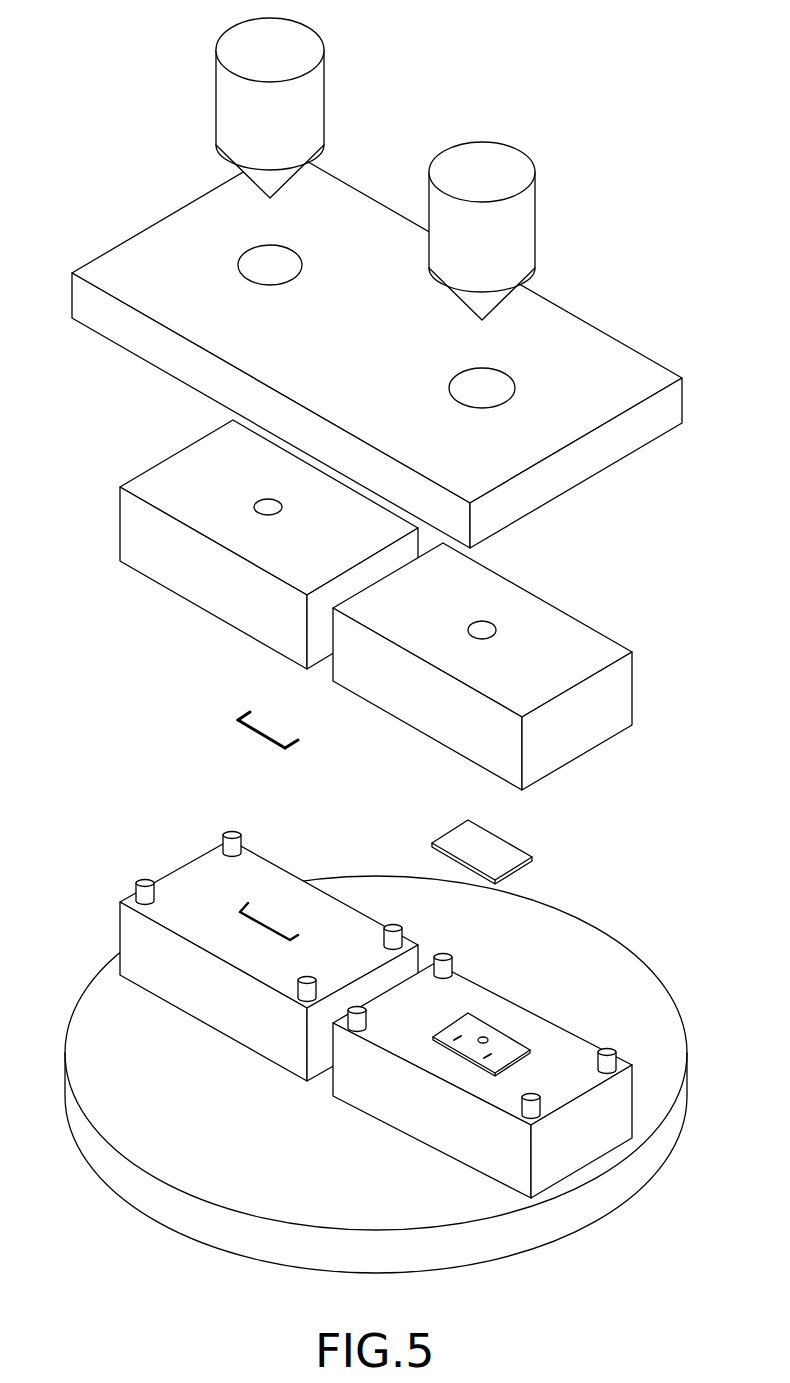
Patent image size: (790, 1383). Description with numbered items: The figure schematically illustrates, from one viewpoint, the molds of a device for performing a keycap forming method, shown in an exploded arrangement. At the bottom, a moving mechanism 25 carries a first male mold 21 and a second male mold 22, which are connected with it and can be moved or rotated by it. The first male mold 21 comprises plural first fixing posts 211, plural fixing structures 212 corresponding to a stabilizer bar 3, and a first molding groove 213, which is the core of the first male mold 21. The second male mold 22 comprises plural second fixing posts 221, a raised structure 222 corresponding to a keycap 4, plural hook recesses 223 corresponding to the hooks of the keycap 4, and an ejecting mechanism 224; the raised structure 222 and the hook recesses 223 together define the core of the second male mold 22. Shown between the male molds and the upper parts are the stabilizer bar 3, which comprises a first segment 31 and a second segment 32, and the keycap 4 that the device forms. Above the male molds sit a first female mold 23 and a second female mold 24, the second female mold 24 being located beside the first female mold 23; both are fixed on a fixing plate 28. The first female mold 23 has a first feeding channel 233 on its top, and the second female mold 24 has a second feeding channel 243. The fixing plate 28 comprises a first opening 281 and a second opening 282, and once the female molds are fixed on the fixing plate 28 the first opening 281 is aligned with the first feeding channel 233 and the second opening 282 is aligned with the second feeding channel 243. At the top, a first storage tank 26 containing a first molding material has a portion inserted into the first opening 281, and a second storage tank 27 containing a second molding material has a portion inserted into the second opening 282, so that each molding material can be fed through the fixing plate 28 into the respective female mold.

The stabilizer bar 3 is at (258, 740).
The keycap 4 is at (487, 855).
The first male mold 21 is at (240, 957).
The second male mold 22 is at (478, 1076).
The first female mold 23 is at (269, 536).
The second female mold 24 is at (490, 666).
The moving mechanism 25 is at (572, 943).
The first storage tank 26 is at (292, 43).
The second storage tank 27 is at (505, 168).
The fixing plate 28 is at (380, 348).
The first segment 31 is at (253, 735).
The second segment 32 is at (250, 712).
The first fixing posts 211 is at (143, 882).
The fixing structures 212 is at (250, 893).
The first molding groove 213 is at (292, 927).
The second fixing posts 221 is at (512, 1115).
The raised structure 222 is at (463, 1030).
The hook recesses 223 is at (486, 1049).
The ejecting mechanism 224 is at (483, 1033).
The first feeding channel 233 is at (267, 507).
The second feeding channel 243 is at (482, 630).
The first opening 281 is at (280, 265).
The second opening 282 is at (493, 390).